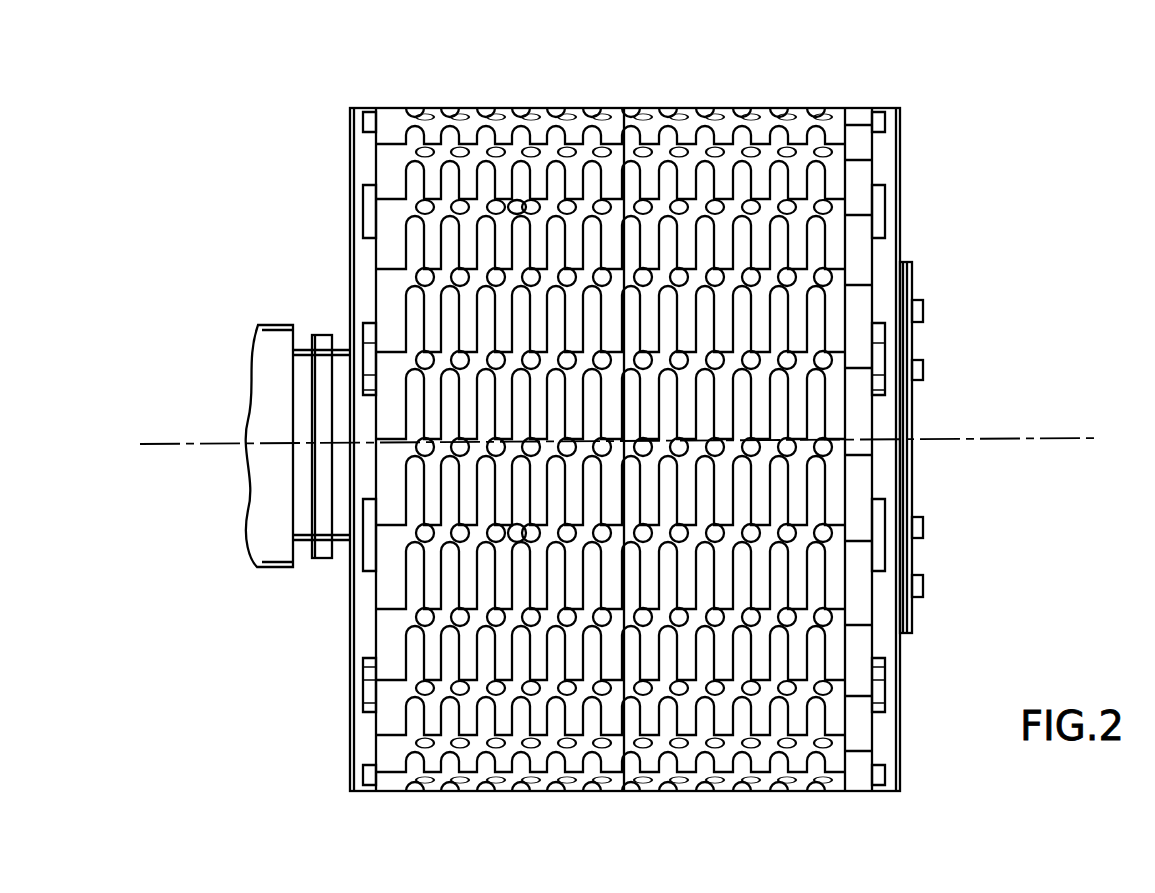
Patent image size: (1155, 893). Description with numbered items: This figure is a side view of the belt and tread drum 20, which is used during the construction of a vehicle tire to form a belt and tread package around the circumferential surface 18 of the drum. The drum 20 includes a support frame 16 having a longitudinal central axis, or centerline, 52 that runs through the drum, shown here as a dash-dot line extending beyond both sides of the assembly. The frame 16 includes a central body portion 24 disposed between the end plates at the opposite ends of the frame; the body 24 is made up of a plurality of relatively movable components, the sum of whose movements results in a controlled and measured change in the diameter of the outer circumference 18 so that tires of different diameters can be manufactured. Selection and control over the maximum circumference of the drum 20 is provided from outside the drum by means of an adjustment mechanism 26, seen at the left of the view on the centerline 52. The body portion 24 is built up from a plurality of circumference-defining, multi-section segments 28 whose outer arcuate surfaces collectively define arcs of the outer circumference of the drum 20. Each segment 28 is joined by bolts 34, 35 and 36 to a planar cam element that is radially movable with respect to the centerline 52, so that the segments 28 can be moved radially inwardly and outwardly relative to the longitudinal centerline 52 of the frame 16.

The support frame 16 is at (912, 560).
The circumferential surface 18 is at (585, 105).
The belt and tread drum 20 is at (647, 440).
The central body portion 24 is at (912, 472).
The adjustment mechanism 26 is at (270, 325).
The multi-section segments 28 is at (857, 242).
The bolt 34 is at (507, 110).
The bolt 35 is at (648, 108).
The bolt 36 is at (767, 205).
The longitudinal central axis 52 is at (1010, 437).